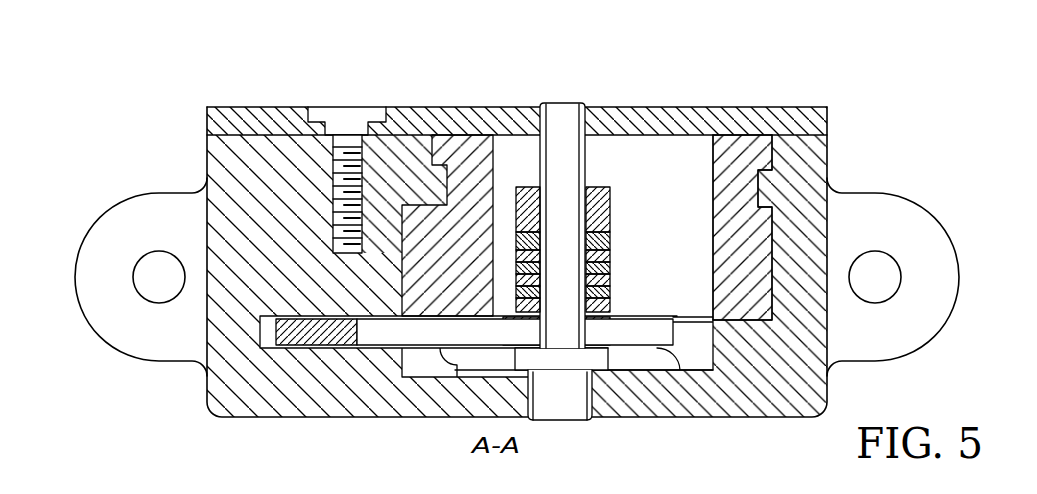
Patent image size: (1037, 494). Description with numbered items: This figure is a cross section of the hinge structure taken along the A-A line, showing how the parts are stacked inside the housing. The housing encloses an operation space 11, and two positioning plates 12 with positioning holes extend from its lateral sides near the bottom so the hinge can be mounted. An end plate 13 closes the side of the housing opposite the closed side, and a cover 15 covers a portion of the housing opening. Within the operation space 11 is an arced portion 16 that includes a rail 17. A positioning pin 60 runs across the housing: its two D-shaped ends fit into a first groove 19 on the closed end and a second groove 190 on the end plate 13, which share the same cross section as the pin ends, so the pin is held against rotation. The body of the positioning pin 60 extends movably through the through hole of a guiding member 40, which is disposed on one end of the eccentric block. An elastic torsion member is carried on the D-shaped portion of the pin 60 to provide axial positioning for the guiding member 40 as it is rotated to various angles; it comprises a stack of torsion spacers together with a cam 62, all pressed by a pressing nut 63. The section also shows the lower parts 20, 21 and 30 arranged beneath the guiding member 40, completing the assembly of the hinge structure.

The operation space 11 is at (612, 290).
The positioning plate 12 is at (932, 250).
The end plate 13 is at (755, 120).
The cover 15 is at (789, 493).
The arced portion 16 is at (765, 258).
The rail 17 is at (765, 185).
The first groove 19 is at (600, 393).
The clamping block 20 is at (318, 493).
The sliding plate 21 is at (430, 493).
The nut 30 is at (610, 493).
The guiding member 40 is at (612, 332).
The positioning pin 60 is at (562, 113).
The cam 62 is at (608, 236).
The pressing nut 63 is at (607, 188).
The second groove 190 is at (585, 122).